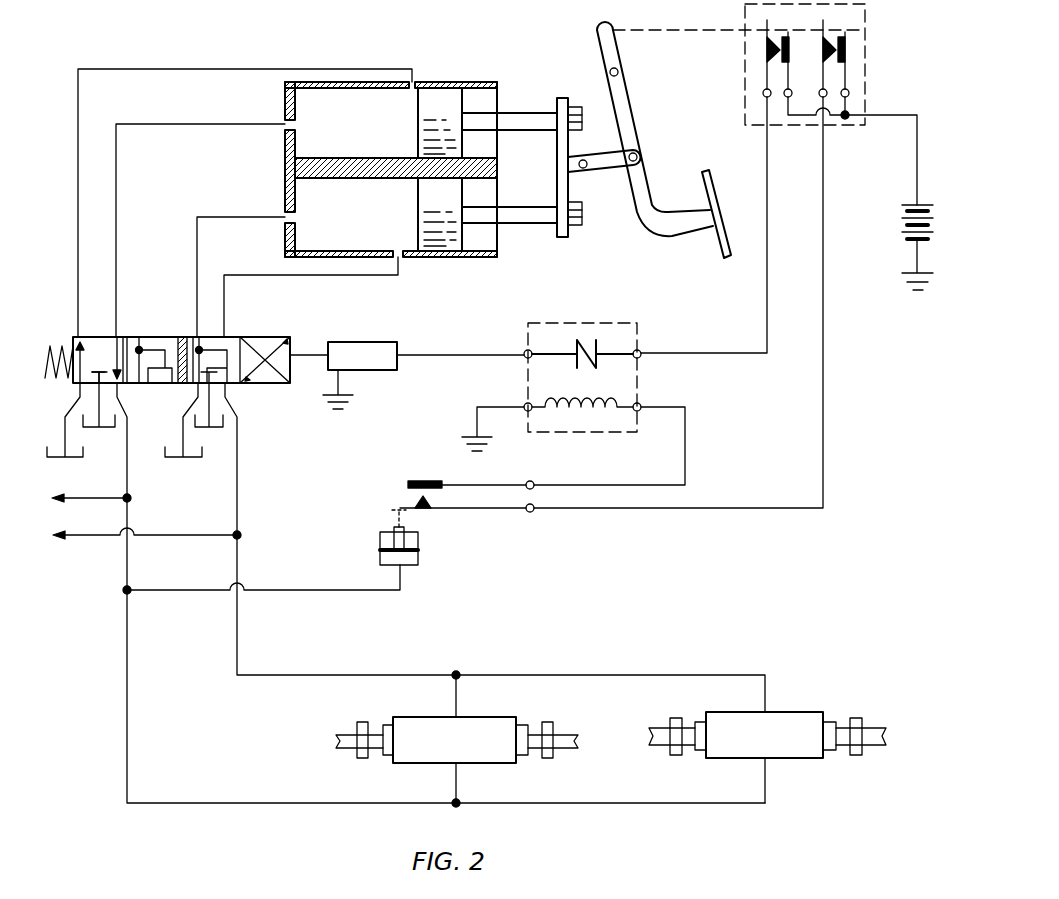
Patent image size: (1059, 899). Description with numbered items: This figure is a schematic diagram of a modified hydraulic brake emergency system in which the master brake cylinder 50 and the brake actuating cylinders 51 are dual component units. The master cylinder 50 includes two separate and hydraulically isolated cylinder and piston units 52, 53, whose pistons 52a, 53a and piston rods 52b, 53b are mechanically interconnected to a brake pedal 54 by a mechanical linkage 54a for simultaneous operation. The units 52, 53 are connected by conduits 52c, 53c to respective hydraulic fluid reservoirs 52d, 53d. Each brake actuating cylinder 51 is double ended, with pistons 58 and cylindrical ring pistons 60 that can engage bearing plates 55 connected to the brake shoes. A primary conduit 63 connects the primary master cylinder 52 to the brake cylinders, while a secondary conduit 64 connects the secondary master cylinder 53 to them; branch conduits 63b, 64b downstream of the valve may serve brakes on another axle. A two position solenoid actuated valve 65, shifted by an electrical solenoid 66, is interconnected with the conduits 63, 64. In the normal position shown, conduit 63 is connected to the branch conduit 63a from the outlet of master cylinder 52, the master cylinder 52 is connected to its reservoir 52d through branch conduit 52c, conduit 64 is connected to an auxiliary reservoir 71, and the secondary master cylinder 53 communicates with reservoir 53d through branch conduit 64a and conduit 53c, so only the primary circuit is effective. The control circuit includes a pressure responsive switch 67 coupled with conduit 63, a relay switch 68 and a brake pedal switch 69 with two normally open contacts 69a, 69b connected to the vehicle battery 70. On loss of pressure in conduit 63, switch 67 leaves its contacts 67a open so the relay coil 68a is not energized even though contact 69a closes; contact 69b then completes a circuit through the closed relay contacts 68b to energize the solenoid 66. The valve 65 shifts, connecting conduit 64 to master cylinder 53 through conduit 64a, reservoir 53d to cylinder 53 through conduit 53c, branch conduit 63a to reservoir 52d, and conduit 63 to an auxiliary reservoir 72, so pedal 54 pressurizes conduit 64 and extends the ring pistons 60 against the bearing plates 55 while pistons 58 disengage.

The master brake cylinder 50 is at (470, 56).
The brake actuating cylinder 51 is at (462, 716).
The primary cylinder and piston unit 52 is at (430, 82).
The primary piston 52a is at (527, 66).
The primary piston rod 52b is at (591, 72).
The branch conduit 52c is at (153, 69).
The hydraulic fluid reservoir 52d is at (70, 412).
The secondary cylinder and piston unit 53 is at (418, 258).
The secondary piston 53a is at (456, 238).
The secondary piston rod 53b is at (547, 222).
The branch conduit 53c is at (297, 276).
The hydraulic fluid reservoir 53d is at (178, 447).
The brake pedal 54 is at (645, 180).
The mechanical linkage 54a is at (600, 165).
The bearing plate 55 is at (353, 730).
The piston 58 is at (573, 687).
The cylindrical ring piston 60 is at (384, 722).
The primary conduit 63 is at (128, 666).
The branch conduit 63a is at (195, 124).
The branch conduit 63b is at (100, 500).
The secondary conduit 64 is at (237, 658).
The branch conduit 64a is at (255, 217).
The branch conduit 64b is at (100, 540).
The solenoid actuated valve 65 is at (257, 384).
The electrical solenoid 66 is at (372, 370).
The pressure responsive switch 67 is at (420, 546).
The switch contacts 67a is at (412, 502).
The relay switch 68 is at (698, 382).
The relay coil 68a is at (583, 425).
The relay switch contacts 68b is at (643, 300).
The brake pedal switch 69 is at (745, 18).
The switch contact 69a is at (828, 40).
The switch contact 69b is at (767, 40).
The vehicle battery 70 is at (902, 220).
The auxiliary reservoir 71 is at (207, 433).
The auxiliary reservoir 72 is at (87, 432).